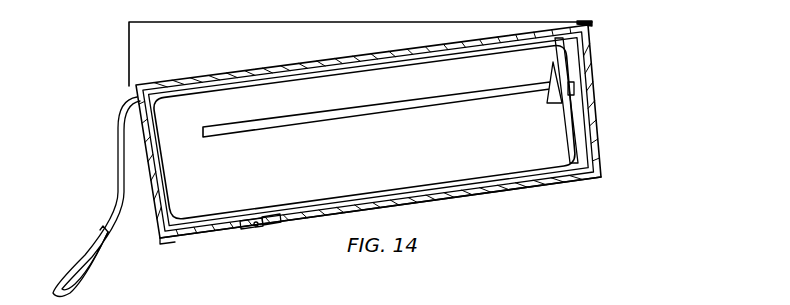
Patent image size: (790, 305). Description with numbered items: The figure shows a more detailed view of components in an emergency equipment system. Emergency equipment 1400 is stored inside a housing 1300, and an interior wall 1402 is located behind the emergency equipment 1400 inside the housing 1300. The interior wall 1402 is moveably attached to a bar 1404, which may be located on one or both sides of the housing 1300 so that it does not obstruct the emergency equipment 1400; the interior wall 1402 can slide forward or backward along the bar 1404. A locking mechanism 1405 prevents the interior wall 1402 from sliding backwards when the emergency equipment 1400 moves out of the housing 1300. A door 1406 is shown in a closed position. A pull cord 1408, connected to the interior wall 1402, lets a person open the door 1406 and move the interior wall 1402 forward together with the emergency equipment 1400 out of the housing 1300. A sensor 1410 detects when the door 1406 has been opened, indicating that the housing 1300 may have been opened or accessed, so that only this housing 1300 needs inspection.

The housing 1300 is at (516, 189).
The emergency equipment 1400 is at (150, 158).
The interior wall 1402 is at (562, 46).
The bar 1404 is at (380, 118).
The locking mechanism 1405 is at (548, 90).
The door 1406 is at (181, 236).
The pull cord 1408 is at (113, 203).
The sensor 1410 is at (268, 229).